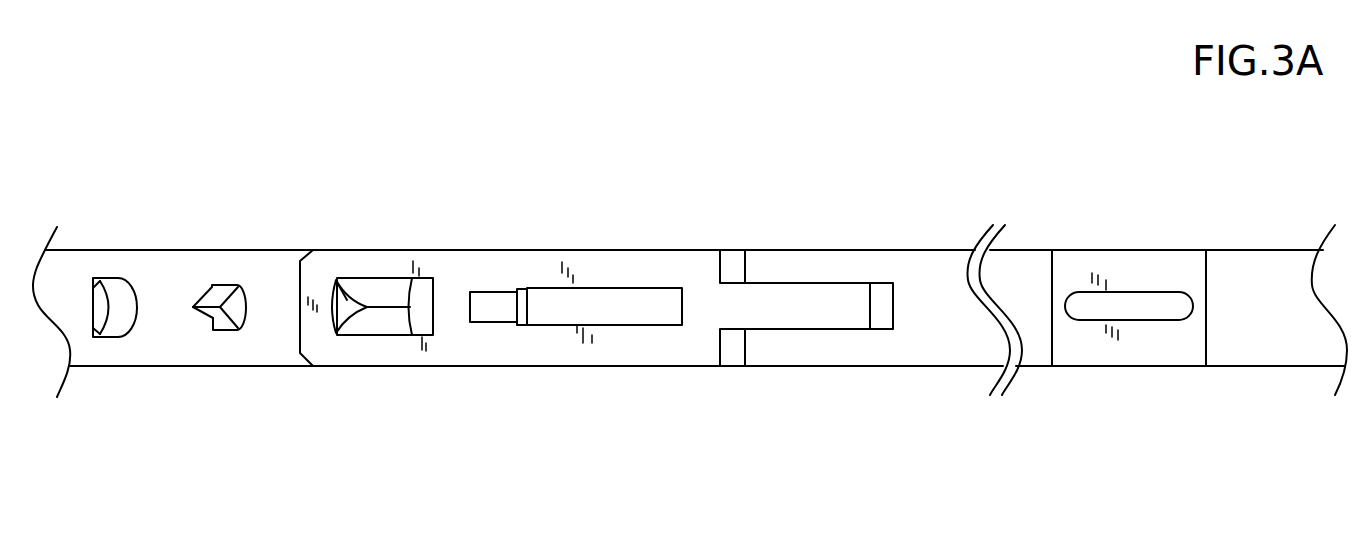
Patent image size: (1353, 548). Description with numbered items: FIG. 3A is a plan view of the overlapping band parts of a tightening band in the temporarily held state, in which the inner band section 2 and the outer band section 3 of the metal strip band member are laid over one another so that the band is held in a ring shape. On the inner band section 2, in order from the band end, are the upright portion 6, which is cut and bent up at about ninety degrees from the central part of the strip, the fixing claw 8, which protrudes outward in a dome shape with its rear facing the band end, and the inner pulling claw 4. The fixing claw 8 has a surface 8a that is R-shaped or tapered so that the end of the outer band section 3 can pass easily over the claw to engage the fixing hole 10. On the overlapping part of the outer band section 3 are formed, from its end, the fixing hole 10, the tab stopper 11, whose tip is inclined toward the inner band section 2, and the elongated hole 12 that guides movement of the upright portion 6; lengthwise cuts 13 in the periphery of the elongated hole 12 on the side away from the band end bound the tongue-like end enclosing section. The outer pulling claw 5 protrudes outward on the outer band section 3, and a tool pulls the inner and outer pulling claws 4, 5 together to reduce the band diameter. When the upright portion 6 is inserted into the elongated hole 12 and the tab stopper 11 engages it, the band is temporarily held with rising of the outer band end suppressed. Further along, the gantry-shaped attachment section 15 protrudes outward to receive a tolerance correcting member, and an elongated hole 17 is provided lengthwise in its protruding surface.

The inner band section 2 is at (273, 350).
The outer band section 3 is at (447, 267).
The inner pulling claw 4 is at (100, 290).
The outer pulling claw 5 is at (388, 297).
The upright portion 6 is at (524, 307).
The fixing claw 8 is at (203, 300).
The surface of fixing claw 8a is at (233, 303).
The fixing hole 10 is at (337, 283).
The tab stopper 11 is at (488, 305).
The elongated hole 12 is at (630, 296).
The cuts 13 is at (814, 283).
The attachment section 15 is at (1120, 347).
The elongated hole 17 is at (1124, 292).